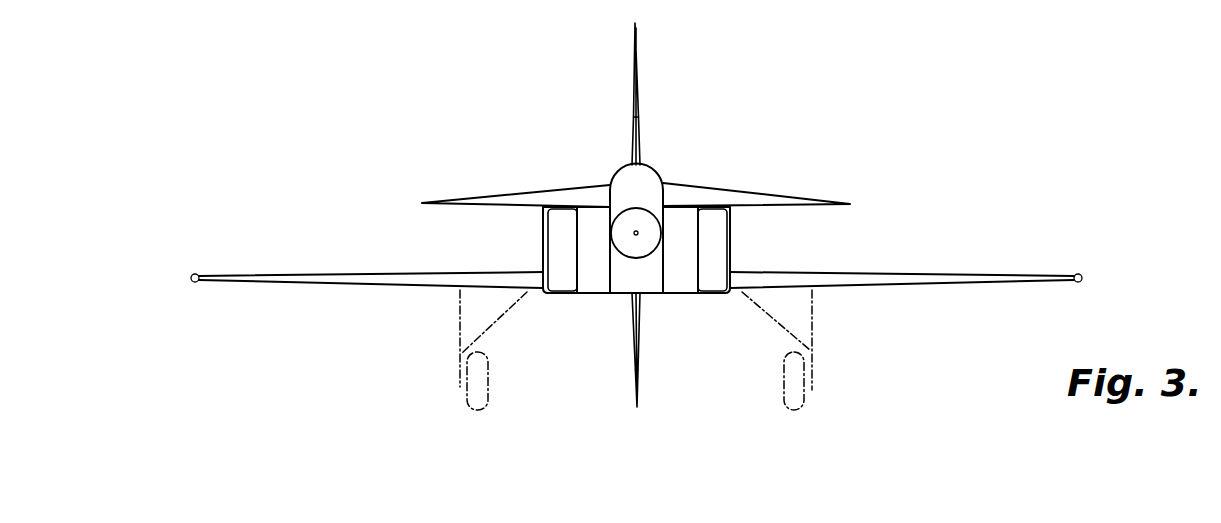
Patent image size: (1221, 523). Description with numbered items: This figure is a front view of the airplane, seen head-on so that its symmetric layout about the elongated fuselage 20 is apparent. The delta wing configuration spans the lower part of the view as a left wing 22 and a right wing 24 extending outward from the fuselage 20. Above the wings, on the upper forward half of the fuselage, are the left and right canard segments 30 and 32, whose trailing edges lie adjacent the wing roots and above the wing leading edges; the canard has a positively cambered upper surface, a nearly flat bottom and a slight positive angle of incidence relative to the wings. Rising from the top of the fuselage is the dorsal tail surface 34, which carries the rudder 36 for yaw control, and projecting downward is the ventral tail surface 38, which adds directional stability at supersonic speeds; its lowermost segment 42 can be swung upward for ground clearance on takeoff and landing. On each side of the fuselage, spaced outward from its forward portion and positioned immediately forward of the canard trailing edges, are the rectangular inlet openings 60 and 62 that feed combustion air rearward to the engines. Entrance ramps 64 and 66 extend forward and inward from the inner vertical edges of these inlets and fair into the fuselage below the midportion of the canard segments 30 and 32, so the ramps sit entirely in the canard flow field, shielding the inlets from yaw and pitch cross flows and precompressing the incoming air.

The fuselage 20 is at (622, 173).
The left wing 22 is at (860, 278).
The right wing 24 is at (333, 272).
The left canard segment 30 is at (722, 192).
The right canard segment 32 is at (537, 193).
The dorsal tail surface 34 is at (640, 135).
The rudder 36 is at (637, 77).
The ventral tail surface 38 is at (638, 330).
The lowermost segment 42 is at (639, 387).
The rectangular opening 60 is at (717, 240).
The rectangular opening 62 is at (553, 247).
The entrance ramp 64 is at (683, 277).
The entrance ramp 66 is at (590, 282).